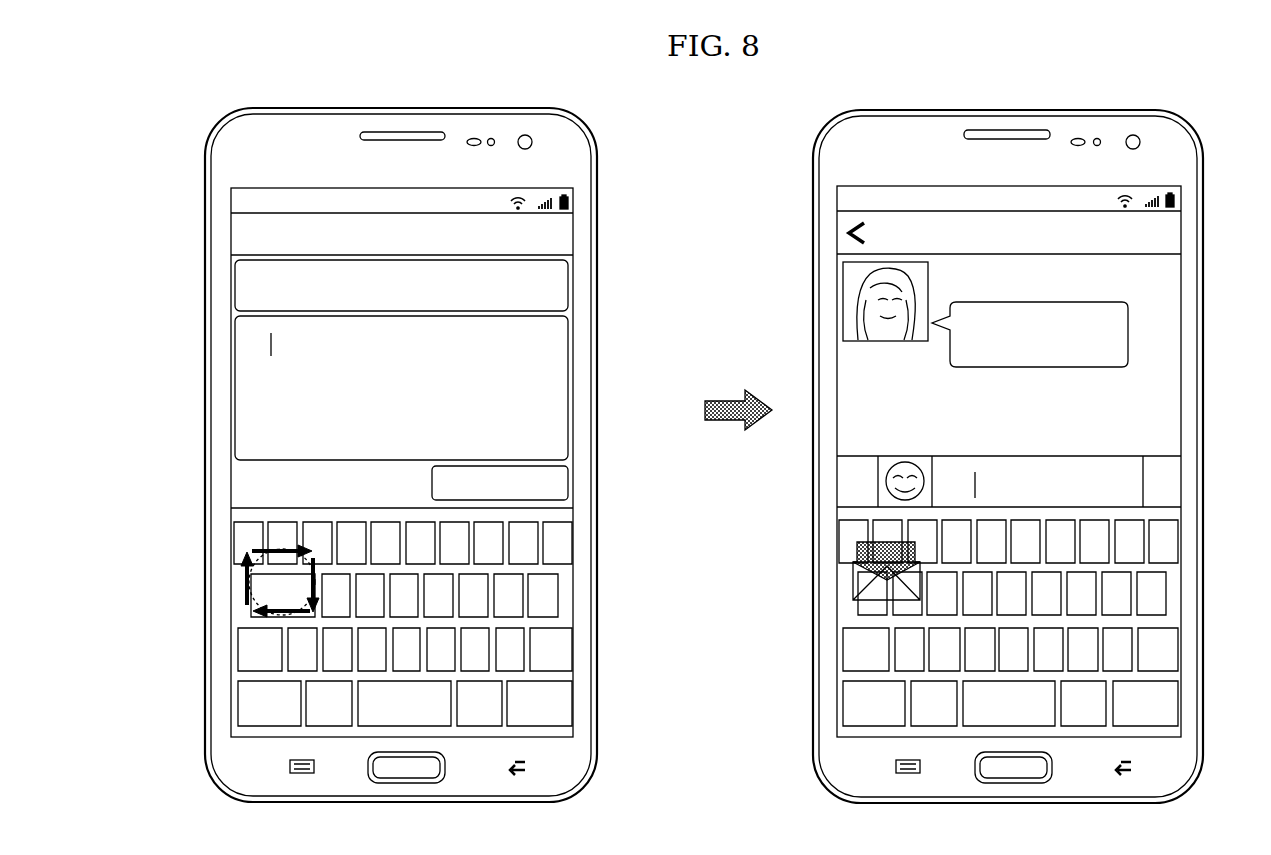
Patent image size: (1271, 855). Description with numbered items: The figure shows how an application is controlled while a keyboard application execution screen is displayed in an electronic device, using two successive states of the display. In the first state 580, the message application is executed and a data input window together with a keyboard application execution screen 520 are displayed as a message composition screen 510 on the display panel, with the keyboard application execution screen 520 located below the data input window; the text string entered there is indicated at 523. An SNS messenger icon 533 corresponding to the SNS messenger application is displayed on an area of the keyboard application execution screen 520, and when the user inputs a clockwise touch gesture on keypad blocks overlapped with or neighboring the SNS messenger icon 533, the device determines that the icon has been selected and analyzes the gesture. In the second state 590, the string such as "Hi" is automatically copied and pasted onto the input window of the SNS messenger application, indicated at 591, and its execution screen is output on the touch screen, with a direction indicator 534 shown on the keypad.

The first screen state 580 is at (433, 440).
The second screen state 590 is at (1016, 440).
The message composition screen 510 is at (600, 735).
The keyboard application execution screen 520 is at (600, 735).
The message input text 523 is at (243, 340).
The SNS messenger icon 533 is at (245, 590).
The hatched direction indicator on key 534 is at (855, 577).
The message display area 591 is at (1219, 734).